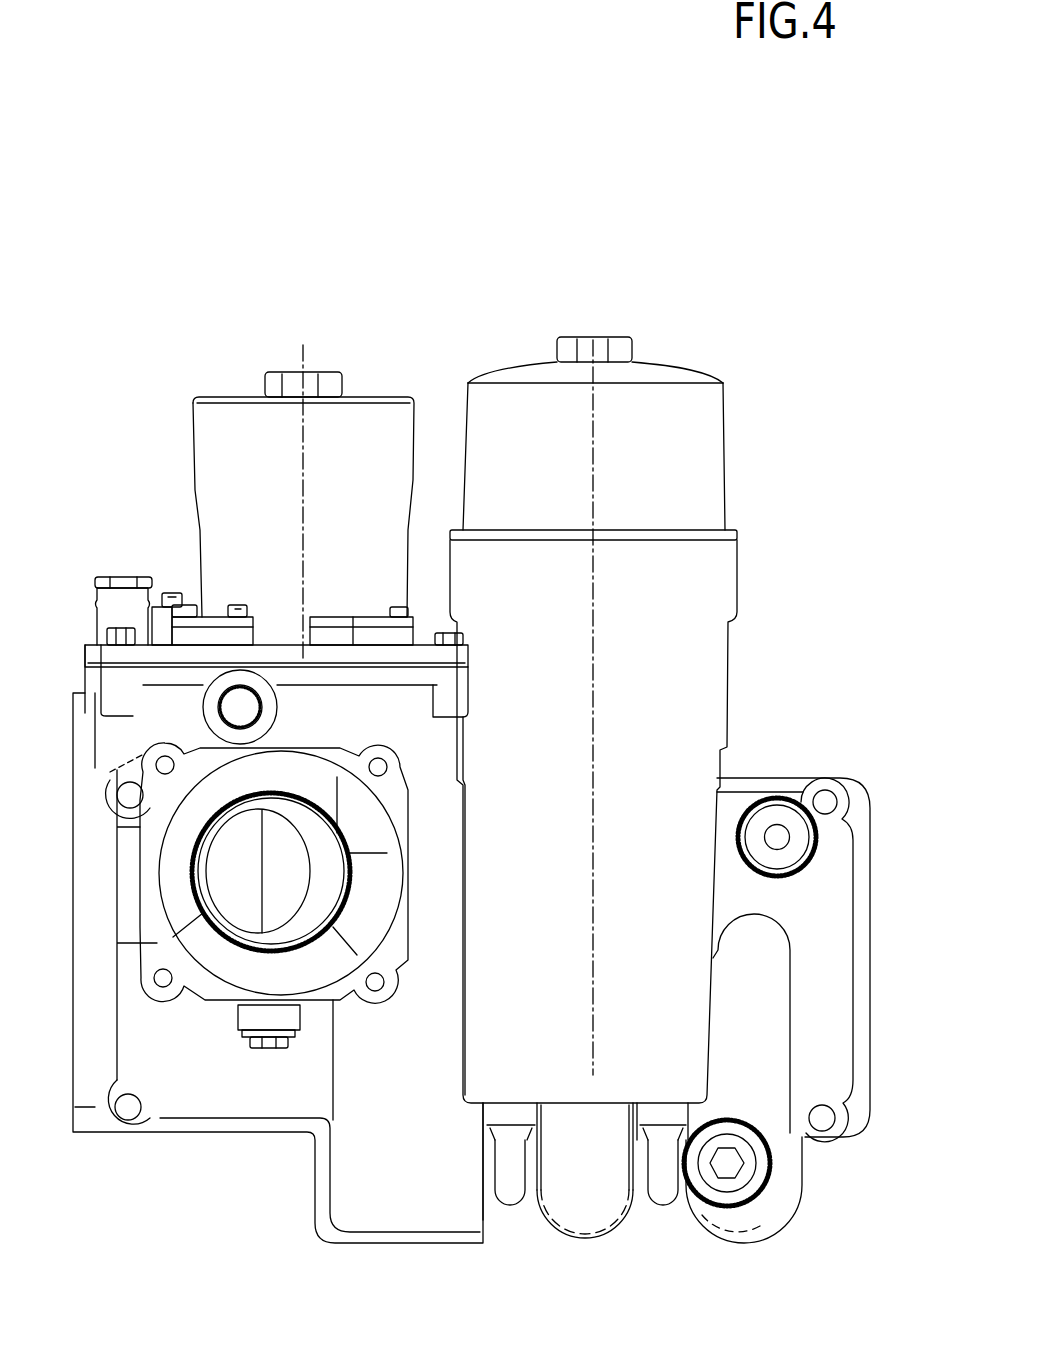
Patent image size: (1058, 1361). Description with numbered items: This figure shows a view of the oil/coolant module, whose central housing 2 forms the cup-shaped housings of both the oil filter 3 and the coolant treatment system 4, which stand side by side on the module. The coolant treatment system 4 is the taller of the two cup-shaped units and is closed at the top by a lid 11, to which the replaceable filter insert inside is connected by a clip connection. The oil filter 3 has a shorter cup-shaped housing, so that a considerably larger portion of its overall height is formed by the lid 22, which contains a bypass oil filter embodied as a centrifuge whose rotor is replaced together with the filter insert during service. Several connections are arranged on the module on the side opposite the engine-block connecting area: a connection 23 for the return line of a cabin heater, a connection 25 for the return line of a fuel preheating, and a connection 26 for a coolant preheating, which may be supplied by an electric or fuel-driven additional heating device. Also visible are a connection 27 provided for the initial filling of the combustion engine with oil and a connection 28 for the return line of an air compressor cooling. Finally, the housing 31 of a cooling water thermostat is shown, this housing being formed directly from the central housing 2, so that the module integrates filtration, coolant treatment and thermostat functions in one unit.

The central housing 2 is at (730, 803).
The oil filter 3 is at (693, 685).
The coolant treatment system 4 is at (222, 462).
The lid 11 is at (358, 398).
The lid 22 is at (697, 478).
The connection 23 is at (227, 620).
The connection 25 is at (260, 1040).
The connection 26 is at (783, 820).
The connection 27 is at (743, 1183).
The connection 28 is at (233, 718).
The housing of a cooling water thermostat 31 is at (217, 950).